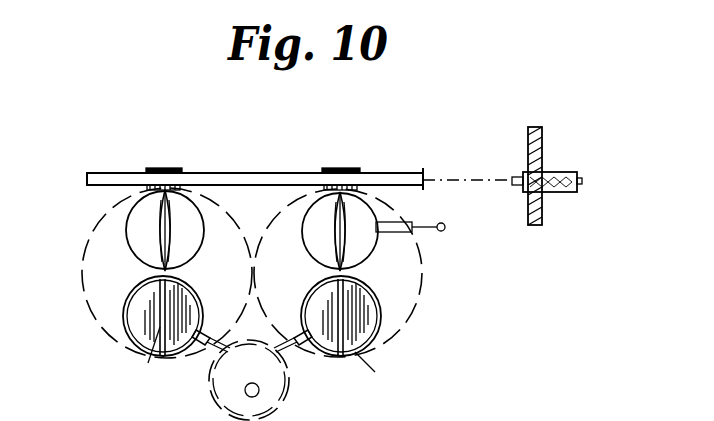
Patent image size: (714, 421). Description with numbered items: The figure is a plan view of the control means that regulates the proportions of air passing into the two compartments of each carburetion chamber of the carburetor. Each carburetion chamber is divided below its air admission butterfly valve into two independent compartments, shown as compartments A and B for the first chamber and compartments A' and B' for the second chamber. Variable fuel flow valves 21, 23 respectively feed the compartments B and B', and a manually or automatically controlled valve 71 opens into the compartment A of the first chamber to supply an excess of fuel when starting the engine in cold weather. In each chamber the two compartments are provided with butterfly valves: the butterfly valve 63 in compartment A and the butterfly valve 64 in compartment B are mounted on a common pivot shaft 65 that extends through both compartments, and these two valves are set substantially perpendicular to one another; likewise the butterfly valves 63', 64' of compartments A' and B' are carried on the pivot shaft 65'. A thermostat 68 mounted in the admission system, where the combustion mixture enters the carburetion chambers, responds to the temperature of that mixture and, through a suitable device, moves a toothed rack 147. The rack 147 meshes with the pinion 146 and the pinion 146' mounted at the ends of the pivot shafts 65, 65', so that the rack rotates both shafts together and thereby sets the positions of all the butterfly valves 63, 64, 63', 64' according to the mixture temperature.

The toothed rack 147 is at (238, 173).
The pinion 146 is at (366, 162).
The pinion 146' is at (172, 154).
The compartment A is at (314, 230).
The compartment A' is at (153, 205).
The compartment B is at (370, 316).
The compartment B' is at (131, 316).
The butterfly valve 63 is at (401, 234).
The butterfly valve 63' is at (109, 230).
The butterfly valve 64 is at (367, 316).
The butterfly valve 64' is at (144, 306).
The pivot shaft 65 is at (378, 374).
The pivot shaft 65' is at (143, 360).
The valve 71 is at (400, 220).
The thermostat 68 is at (562, 172).
The variable fuel flow valve 23 is at (200, 350).
The variable fuel flow valve 21 is at (290, 357).